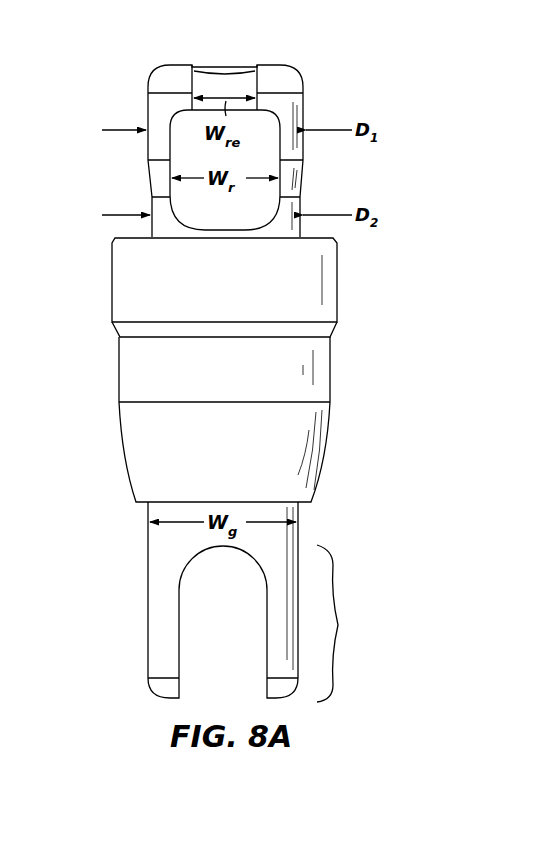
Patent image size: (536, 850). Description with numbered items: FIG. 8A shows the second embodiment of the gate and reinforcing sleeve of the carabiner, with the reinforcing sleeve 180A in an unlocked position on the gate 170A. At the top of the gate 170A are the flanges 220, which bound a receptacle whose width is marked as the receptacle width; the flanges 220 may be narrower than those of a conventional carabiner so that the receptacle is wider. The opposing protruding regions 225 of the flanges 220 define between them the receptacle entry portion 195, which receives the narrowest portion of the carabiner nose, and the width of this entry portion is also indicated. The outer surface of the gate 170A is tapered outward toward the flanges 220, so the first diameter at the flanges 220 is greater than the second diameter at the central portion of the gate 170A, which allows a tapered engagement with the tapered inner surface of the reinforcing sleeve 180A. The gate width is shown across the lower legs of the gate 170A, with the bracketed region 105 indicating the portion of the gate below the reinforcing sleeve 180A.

The receptacle entry portion 195 is at (255, 52).
The protruding regions 225 is at (282, 82).
The flanges 220 is at (170, 109).
The reinforcing sleeve 180A is at (150, 379).
The gate 170A is at (167, 548).
The clip 105 is at (351, 623).